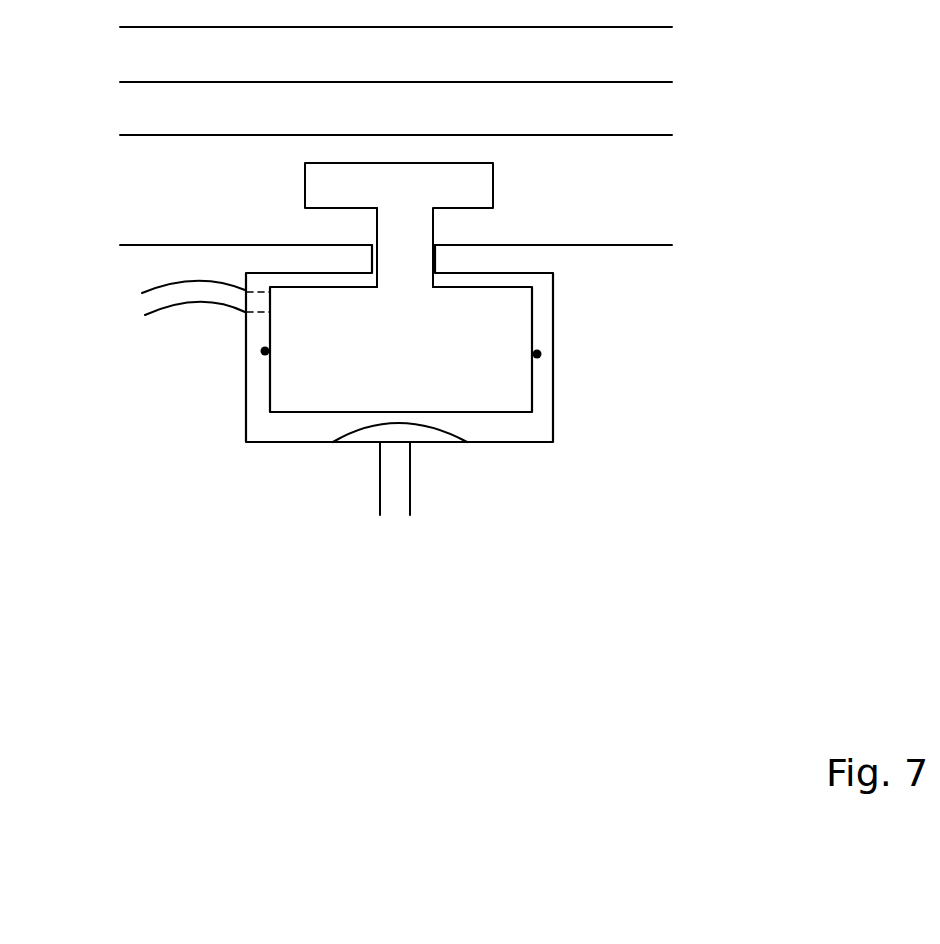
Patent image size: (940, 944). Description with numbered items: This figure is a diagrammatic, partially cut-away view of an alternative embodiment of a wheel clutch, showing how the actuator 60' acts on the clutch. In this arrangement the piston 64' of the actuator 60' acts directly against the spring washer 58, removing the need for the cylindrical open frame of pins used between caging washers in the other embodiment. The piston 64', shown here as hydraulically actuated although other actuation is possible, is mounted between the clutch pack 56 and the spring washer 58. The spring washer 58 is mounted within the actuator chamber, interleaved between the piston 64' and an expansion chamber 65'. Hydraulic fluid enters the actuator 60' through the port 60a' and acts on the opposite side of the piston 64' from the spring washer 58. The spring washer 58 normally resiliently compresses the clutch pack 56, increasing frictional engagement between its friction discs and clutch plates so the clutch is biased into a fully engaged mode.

The clutch pack 56 is at (690, 163).
The actuator 60' is at (466, 343).
The piston 64' is at (434, 349).
The port 60a' is at (238, 305).
The spring washer 58 is at (460, 433).
The expansion chamber 65' is at (421, 478).